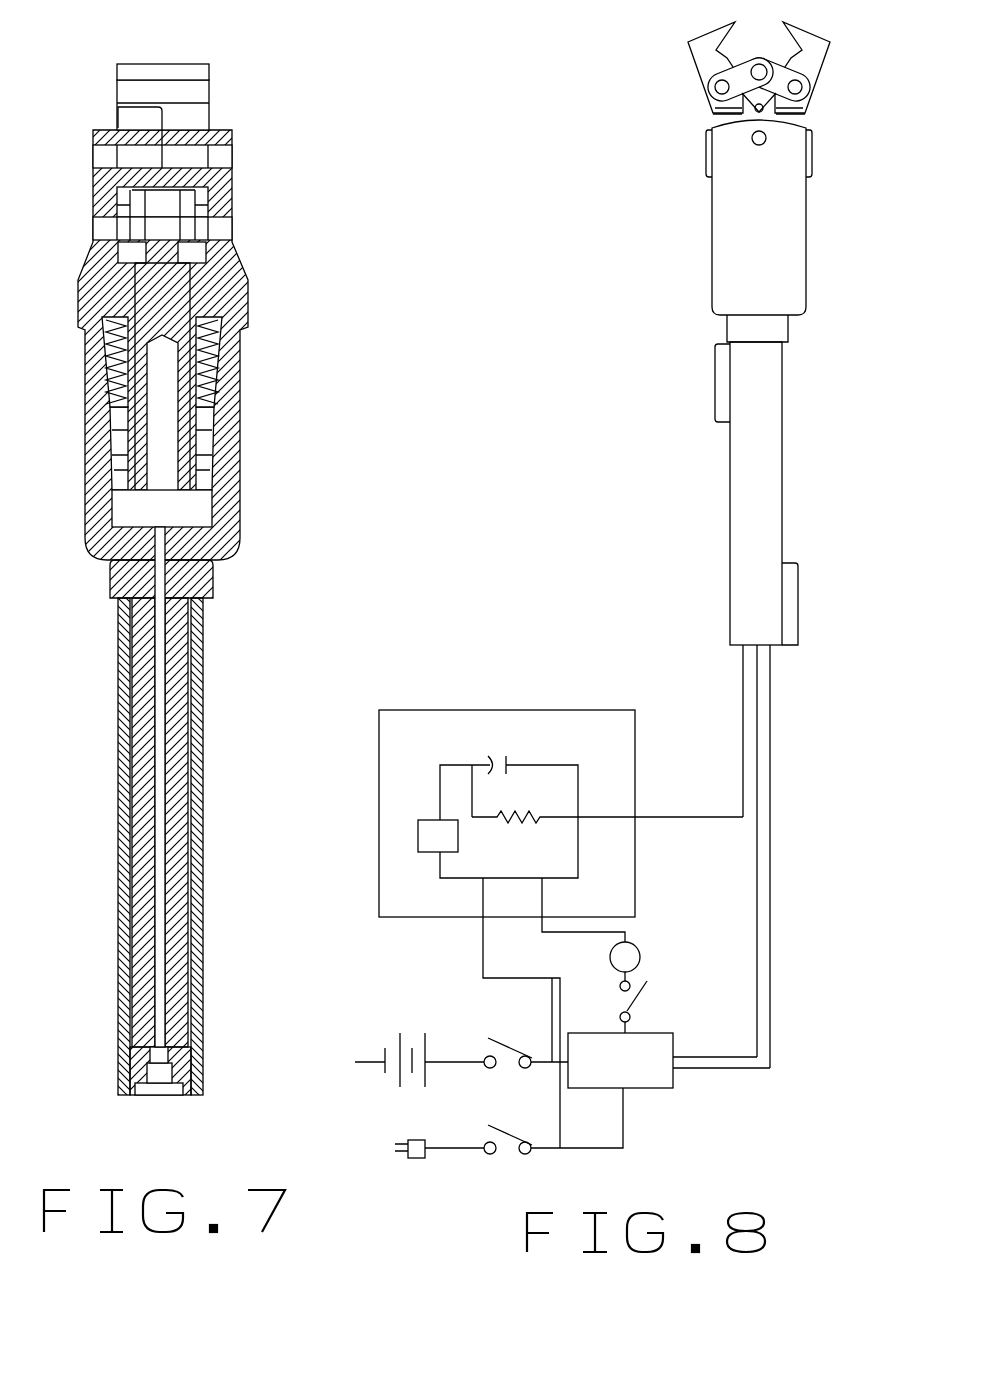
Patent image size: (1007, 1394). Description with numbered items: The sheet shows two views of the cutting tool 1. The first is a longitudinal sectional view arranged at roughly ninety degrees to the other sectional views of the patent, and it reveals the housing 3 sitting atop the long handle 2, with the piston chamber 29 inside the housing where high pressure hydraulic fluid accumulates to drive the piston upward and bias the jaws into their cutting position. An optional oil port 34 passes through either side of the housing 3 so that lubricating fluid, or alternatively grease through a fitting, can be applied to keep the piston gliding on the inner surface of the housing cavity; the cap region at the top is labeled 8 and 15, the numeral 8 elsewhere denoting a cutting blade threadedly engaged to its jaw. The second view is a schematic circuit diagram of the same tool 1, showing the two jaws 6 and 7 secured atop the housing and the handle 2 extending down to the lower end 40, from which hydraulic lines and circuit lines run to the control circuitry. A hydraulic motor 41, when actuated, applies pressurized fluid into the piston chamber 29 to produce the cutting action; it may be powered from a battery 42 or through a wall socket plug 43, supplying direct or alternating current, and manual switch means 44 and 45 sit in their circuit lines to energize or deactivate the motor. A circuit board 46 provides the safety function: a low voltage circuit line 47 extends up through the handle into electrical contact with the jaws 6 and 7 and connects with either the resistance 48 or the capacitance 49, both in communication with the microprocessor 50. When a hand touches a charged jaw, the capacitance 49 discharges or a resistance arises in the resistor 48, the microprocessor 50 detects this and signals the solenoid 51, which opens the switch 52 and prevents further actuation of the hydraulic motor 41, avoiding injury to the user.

In FIG. 7, the cutting tool 1 is at (181, 556).
In FIG. 8, the cutting tool 1 is at (759, 545).
In FIG. 7, the handle 2 is at (118, 840).
In FIG. 8, the handle 2 is at (782, 503).
In FIG. 7, the housing 3 is at (85, 485).
In FIG. 8, the jaw 6 is at (708, 62).
In FIG. 8, the jaw 7 is at (812, 62).
In FIG. 7, the cutting blade 8 is at (196, 88).
In FIG. 7, the end plate 15 is at (180, 63).
In FIG. 7, the piston chamber 29 is at (188, 515).
In FIG. 7, the oil port 34 is at (98, 338).
In FIG. 8, the lower end 40 is at (771, 648).
In FIG. 8, the hydraulic motor 41 is at (650, 1090).
In FIG. 8, the battery 42 is at (398, 1045).
In FIG. 8, the wall socket plug 43 is at (415, 1159).
In FIG. 8, the manual switch means 44 is at (506, 1043).
In FIG. 8, the manual switch means 45 is at (523, 1154).
In FIG. 8, the circuit board 46 is at (507, 904).
In FIG. 8, the low voltage circuit line 47 is at (680, 816).
In FIG. 8, the resistance 48 is at (515, 814).
In FIG. 8, the capacitance 49 is at (517, 762).
In FIG. 8, the microprocessor 50 is at (458, 843).
In FIG. 8, the solenoid 51 is at (637, 946).
In FIG. 8, the switch 52 is at (648, 997).